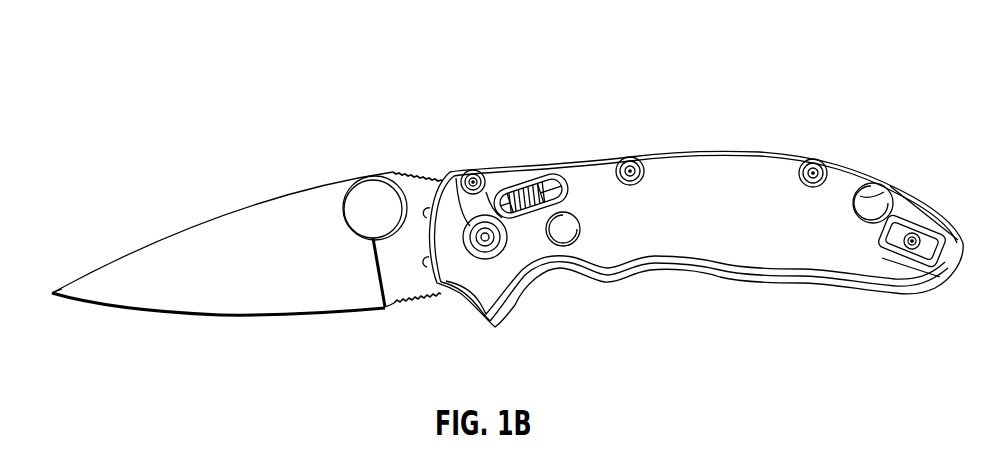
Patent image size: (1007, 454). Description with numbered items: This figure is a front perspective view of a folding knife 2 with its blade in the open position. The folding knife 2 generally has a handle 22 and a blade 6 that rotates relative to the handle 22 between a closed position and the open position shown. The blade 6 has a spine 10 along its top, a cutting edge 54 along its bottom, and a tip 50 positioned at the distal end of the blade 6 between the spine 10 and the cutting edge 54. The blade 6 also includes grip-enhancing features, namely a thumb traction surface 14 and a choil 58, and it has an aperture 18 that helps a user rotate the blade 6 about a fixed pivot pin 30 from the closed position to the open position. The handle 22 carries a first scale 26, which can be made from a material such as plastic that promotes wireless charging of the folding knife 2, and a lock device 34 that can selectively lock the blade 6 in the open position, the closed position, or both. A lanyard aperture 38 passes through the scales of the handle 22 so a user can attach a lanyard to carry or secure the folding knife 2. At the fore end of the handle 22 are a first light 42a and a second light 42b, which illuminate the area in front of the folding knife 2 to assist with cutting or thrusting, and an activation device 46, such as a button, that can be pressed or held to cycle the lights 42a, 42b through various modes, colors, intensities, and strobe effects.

The folding knife 2 is at (134, 60).
The blade 6 is at (237, 304).
The spine 10 is at (235, 206).
The thumb traction surface 14 is at (427, 176).
The aperture 18 is at (368, 210).
The handle 22 is at (676, 152).
The first scale 26 is at (767, 172).
The fixed pivot pin 30 is at (462, 178).
The lock device 34 is at (530, 186).
The lanyard aperture 38 is at (878, 192).
The first light 42a is at (423, 208).
The second light 42b is at (397, 306).
The activation device 46 is at (560, 234).
The tip 50 is at (54, 292).
The cutting edge 54 is at (122, 309).
The choil 58 is at (418, 292).